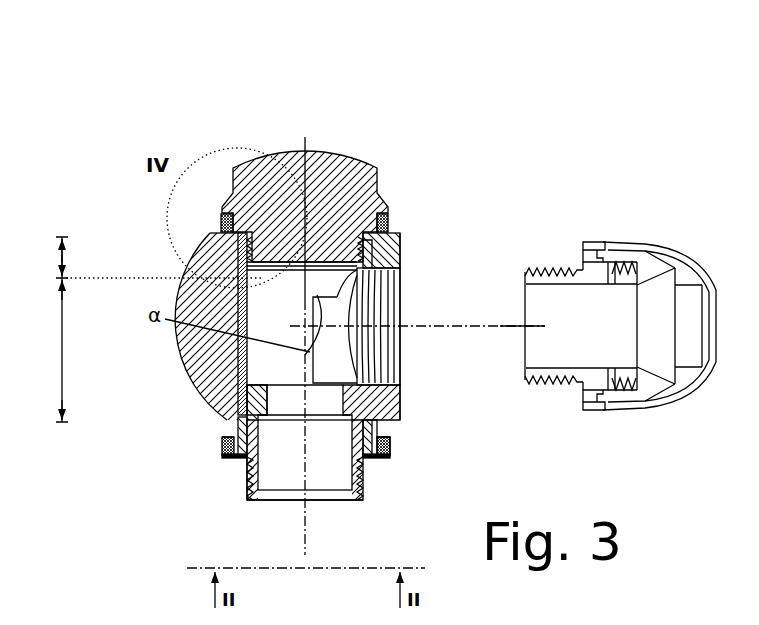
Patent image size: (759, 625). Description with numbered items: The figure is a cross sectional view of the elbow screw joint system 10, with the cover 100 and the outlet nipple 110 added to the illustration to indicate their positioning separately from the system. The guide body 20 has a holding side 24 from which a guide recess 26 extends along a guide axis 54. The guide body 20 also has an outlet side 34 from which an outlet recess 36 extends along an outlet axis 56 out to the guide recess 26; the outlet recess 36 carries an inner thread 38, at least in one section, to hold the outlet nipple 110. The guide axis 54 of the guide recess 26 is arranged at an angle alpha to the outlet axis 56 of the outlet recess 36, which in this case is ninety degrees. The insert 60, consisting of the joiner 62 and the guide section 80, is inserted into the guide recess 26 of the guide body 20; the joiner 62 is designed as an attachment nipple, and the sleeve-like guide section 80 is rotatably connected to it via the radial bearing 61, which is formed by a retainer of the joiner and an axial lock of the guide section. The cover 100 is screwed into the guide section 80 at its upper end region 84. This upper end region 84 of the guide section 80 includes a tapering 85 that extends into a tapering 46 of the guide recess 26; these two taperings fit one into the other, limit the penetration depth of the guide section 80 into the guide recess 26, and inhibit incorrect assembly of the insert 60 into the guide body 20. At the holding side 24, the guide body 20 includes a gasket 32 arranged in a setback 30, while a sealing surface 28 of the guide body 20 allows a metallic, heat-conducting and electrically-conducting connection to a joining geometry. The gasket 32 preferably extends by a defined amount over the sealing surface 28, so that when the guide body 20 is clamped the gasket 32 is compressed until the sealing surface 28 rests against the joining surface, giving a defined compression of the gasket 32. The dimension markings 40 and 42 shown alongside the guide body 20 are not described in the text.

The elbow screw joint system 10 is at (253, 112).
The cover 100 is at (287, 152).
The upper end region 84 is at (225, 212).
The tapering 46 is at (240, 263).
The tapering 85 is at (242, 268).
The guide body 20 is at (186, 282).
The guide recess 26 is at (236, 352).
The guide section 80 is at (237, 395).
The radial bearing 61 is at (237, 418).
The joiner 62 is at (247, 470).
The holding side 24 is at (203, 488).
The insert 60 is at (140, 473).
The distance 42 is at (144, 257).
The distance 40 is at (47, 350).
The guide axis 54 is at (305, 137).
The outlet axis 56 is at (500, 325).
The outlet nipple 110 is at (578, 228).
The outlet side 34 is at (404, 257).
The outlet recess 36 is at (402, 307).
The inner thread 38 is at (397, 383).
The setback 30 is at (388, 442).
The gasket 32 is at (391, 451).
The sealing surface 28 is at (390, 462).